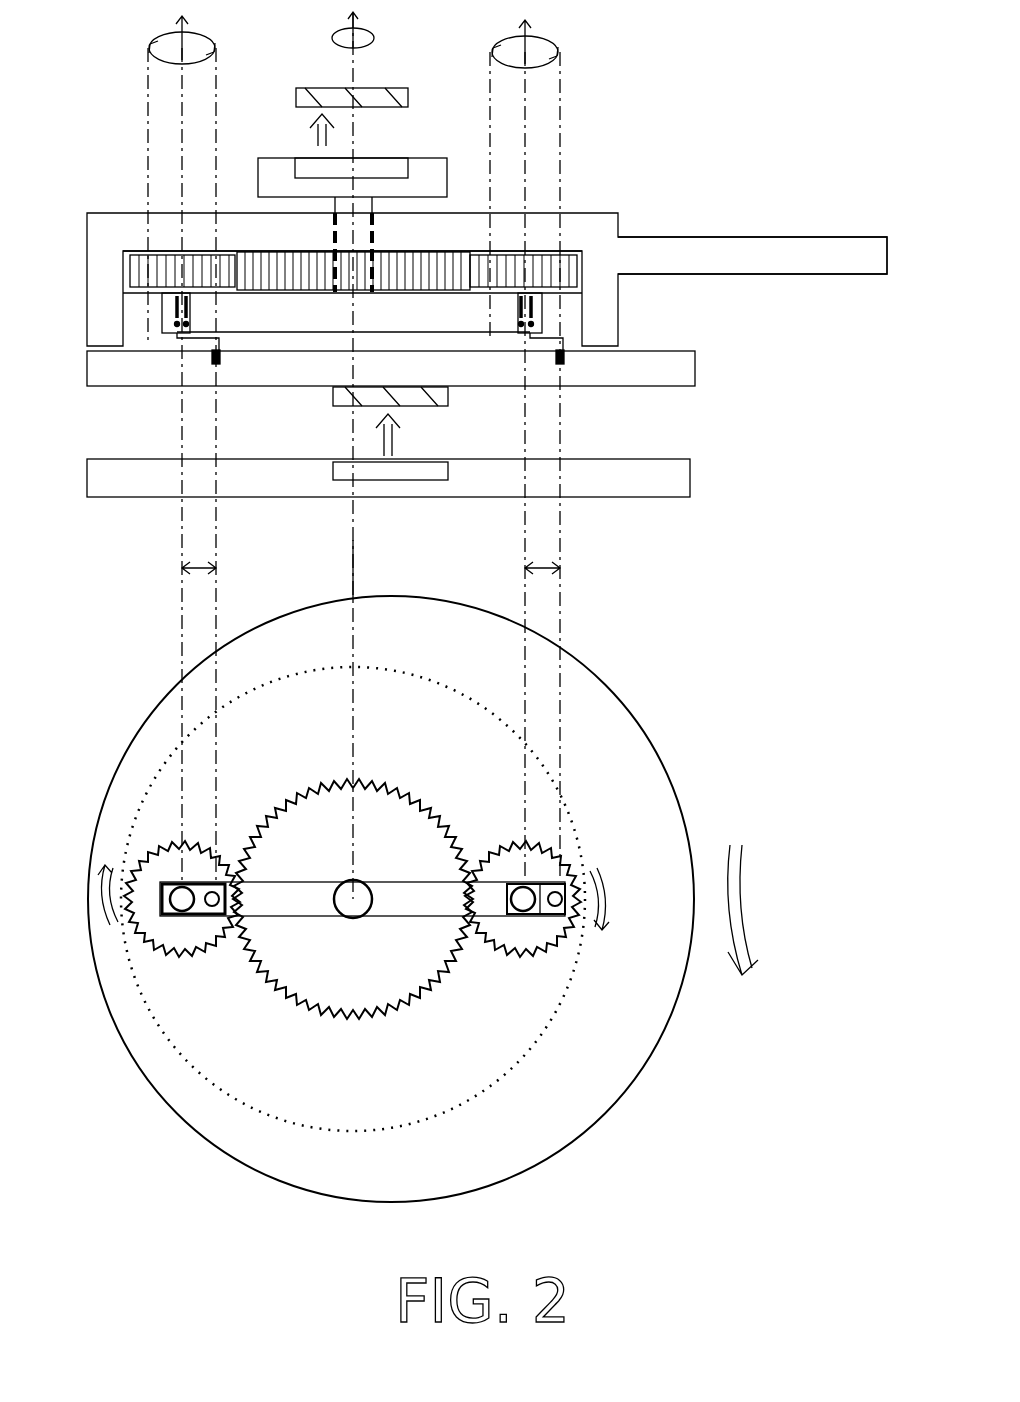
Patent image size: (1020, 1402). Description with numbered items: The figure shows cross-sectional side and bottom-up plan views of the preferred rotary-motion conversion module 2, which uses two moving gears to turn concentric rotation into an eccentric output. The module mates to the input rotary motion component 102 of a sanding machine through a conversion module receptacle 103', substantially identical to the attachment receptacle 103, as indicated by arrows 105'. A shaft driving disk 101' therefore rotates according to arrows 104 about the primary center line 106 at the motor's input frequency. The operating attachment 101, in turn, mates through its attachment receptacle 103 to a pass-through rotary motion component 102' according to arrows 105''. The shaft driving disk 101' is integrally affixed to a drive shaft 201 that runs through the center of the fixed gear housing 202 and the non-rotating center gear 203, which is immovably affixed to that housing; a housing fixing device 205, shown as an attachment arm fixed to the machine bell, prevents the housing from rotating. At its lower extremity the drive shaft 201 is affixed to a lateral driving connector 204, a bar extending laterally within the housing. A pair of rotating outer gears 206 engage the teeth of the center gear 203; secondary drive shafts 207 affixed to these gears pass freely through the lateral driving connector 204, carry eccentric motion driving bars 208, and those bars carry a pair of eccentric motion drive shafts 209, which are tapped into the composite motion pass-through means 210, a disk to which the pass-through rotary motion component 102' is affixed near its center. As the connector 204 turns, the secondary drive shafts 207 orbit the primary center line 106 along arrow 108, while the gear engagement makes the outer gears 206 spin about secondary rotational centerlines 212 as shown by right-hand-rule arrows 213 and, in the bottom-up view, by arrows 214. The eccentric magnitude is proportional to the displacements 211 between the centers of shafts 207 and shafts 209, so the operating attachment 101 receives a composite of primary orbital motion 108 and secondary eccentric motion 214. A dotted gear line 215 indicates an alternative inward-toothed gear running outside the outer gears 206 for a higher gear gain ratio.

The rotary-motion conversion module 2 is at (698, 166).
The operating attachment 101 is at (452, 830).
The shaft driving disk 101' is at (337, 156).
The input rotary motion component 102 is at (375, 82).
The pass-through rotary motion component 102' is at (340, 406).
The attachment receptacle 103 is at (420, 451).
The conversion module receptacle 103' is at (364, 146).
The concentric rotary input motion 104 is at (374, 38).
The mating arrows 105' is at (281, 108).
The mating arrows 105'' is at (342, 435).
The primary center line 106 is at (353, 562).
The primary orbital motion 108 is at (758, 892).
The drive shaft 201 is at (372, 230).
The fixed gear housing 202 is at (276, 249).
The non-rotating center gear 203 is at (417, 268).
The lateral driving connector 204 is at (303, 324).
The housing fixing device 205 is at (783, 273).
The rotating outer gears 206 is at (150, 268).
The secondary drive shafts 207 is at (165, 313).
The eccentric motion driving bars 208 is at (210, 357).
The eccentric motion drive shafts 209 is at (197, 340).
The composite motion pass-through means 210 is at (418, 384).
The displacements 211 is at (200, 572).
The secondary rotational centerlines 212 is at (180, 522).
The spin arrows 213 is at (198, 47).
The secondary eccentric motion 214 is at (100, 890).
The dotted gear line 215 is at (500, 712).